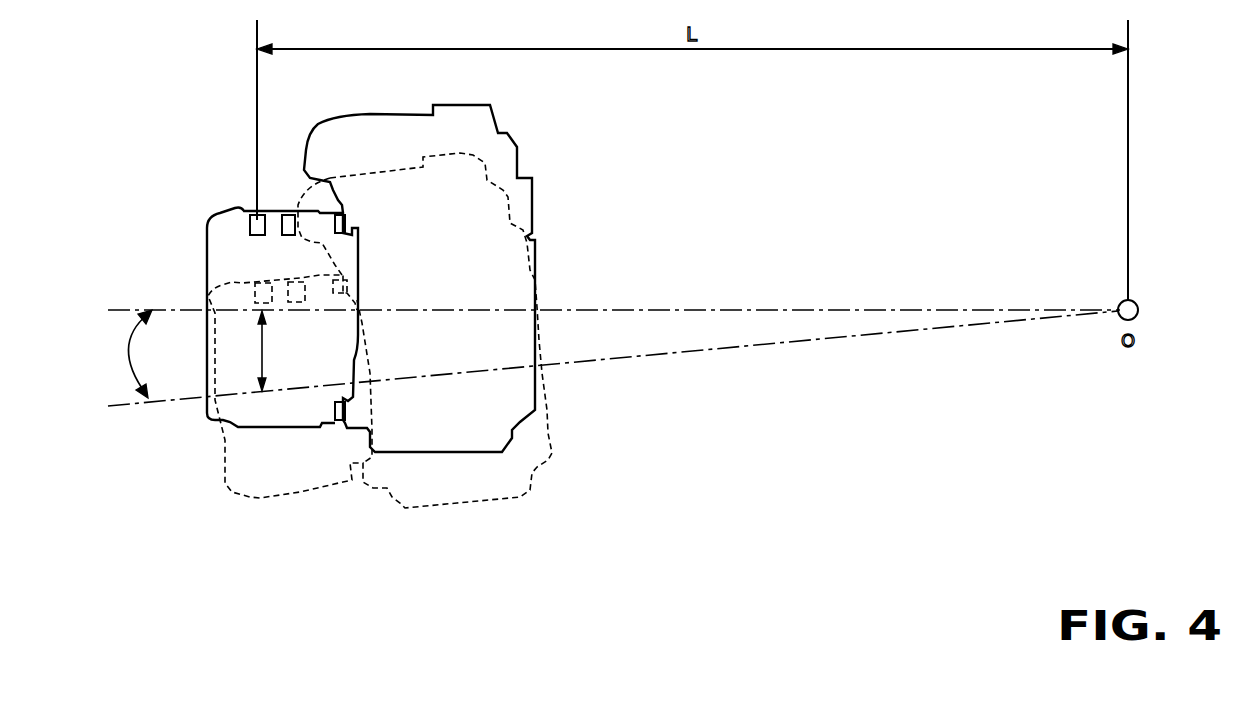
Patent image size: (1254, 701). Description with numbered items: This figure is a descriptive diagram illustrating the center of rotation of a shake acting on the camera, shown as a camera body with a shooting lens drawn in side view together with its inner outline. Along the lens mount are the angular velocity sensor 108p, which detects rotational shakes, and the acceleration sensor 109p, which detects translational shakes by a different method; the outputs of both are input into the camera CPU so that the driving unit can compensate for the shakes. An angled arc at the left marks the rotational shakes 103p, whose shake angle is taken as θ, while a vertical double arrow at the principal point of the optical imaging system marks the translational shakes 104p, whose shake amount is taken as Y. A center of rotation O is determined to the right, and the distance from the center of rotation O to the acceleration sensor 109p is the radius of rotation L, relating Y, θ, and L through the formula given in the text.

The rotational shake 103p is at (132, 378).
The translational shake 104p is at (262, 372).
The angular velocity sensor 108p is at (290, 220).
The acceleration sensor 109p is at (254, 220).